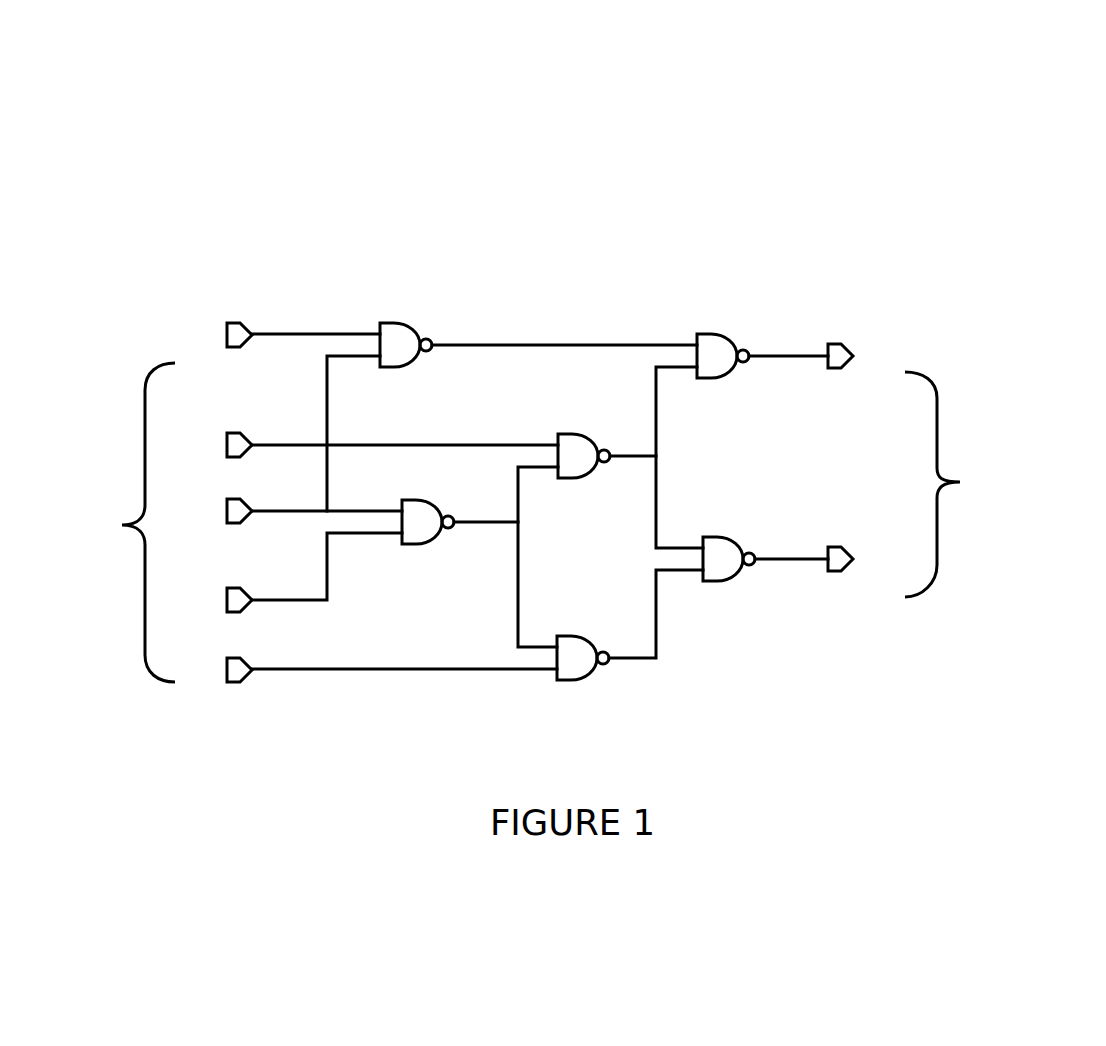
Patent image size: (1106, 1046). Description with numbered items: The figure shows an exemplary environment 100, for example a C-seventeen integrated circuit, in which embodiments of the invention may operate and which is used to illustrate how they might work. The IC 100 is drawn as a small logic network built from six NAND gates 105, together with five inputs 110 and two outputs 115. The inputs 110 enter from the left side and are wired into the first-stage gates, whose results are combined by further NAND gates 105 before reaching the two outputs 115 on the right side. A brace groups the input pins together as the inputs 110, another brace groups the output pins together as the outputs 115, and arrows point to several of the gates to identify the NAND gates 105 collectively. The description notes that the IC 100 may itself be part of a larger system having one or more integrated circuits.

The environment 100 is at (840, 162).
The NAND gates 105 is at (419, 274).
The inputs 110 is at (122, 525).
The outputs 115 is at (960, 482).